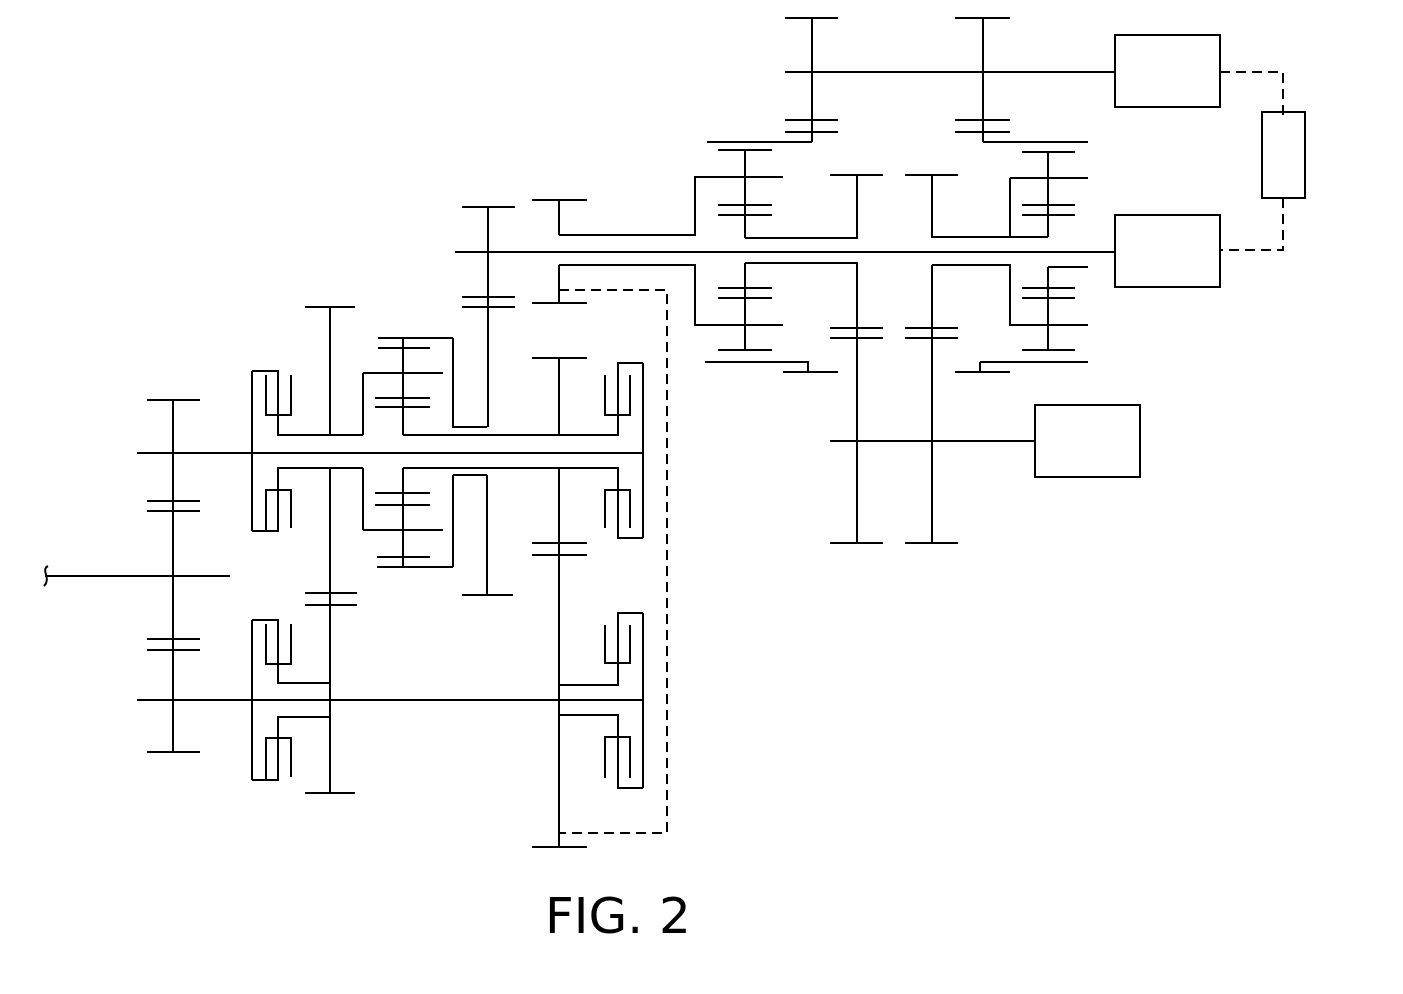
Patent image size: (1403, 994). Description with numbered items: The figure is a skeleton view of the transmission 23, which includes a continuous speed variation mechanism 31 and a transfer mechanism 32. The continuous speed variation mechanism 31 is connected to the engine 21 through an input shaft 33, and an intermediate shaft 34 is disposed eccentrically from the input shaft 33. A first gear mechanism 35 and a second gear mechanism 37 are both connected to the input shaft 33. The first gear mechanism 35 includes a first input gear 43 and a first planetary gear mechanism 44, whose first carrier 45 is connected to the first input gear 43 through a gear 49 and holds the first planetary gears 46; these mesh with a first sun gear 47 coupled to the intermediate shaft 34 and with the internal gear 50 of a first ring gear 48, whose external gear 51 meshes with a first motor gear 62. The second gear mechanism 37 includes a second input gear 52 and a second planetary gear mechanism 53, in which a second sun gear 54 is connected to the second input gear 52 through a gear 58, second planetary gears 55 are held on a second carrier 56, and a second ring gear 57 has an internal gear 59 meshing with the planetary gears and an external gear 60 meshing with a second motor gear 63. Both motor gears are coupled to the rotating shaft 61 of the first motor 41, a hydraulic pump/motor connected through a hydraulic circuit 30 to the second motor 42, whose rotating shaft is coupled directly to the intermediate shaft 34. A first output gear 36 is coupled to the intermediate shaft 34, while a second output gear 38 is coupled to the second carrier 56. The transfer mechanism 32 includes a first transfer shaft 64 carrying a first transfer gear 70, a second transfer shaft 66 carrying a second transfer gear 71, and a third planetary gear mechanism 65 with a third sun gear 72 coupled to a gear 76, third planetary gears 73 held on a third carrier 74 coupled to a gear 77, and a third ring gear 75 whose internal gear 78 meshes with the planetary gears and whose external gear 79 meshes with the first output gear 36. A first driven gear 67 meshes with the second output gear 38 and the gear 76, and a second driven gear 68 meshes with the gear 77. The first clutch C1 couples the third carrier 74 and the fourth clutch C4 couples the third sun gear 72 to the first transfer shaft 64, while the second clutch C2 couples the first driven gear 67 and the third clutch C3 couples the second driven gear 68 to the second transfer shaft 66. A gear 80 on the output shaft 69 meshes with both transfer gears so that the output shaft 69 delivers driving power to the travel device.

The engine 21 is at (1142, 441).
The transmission 23 is at (1100, 620).
The hydraulic circuit 30 is at (1306, 145).
The continuous speed variation mechanism 31 is at (1276, 364).
The transfer mechanism 32 is at (705, 700).
The input shaft 33 is at (992, 443).
The intermediate shaft 34 is at (893, 252).
The first gear mechanism 35 is at (990, 532).
The first output gear 36 is at (483, 205).
The second gear mechanism 37 is at (795, 540).
The second output gear 38 is at (545, 200).
The first motor 41 is at (1220, 50).
The second motor 42 is at (1220, 262).
The first input gear 43 is at (925, 545).
The first planetary gear mechanism 44 is at (1112, 346).
The first carrier 45 is at (953, 236).
The first planetary gears 46 is at (1050, 165).
The first sun gear 47 is at (1088, 270).
The first ring gear 48 is at (1020, 140).
The gear 49 is at (947, 326).
The internal gear 50 is at (1065, 143).
The external gear 51 is at (955, 132).
The second input gear 52 is at (848, 545).
The second planetary gear mechanism 53 is at (765, 389).
The second sun gear 54 is at (760, 283).
The second planetary gears 55 is at (737, 162).
The second carrier 56 is at (600, 235).
The second ring gear 57 is at (752, 142).
The gear 58 is at (878, 326).
The internal gear 59 is at (727, 142).
The external gear 60 is at (838, 132).
The rotating shaft 61 is at (1030, 70).
The first motor gear 62 is at (955, 120).
The second motor gear 63 is at (830, 120).
The first transfer shaft 64 is at (223, 450).
The third planetary gear mechanism 65 is at (413, 596).
The second transfer shaft 66 is at (440, 703).
The first driven gear 67 is at (543, 560).
The second driven gear 68 is at (343, 607).
The output shaft 69 is at (75, 578).
The first transfer gear 70 is at (150, 402).
The second transfer gear 71 is at (150, 650).
The third sun gear 72 is at (405, 424).
The third planetary gears 73 is at (402, 358).
The third carrier 74 is at (313, 433).
The third ring gear 75 is at (447, 338).
The gear 76 is at (545, 543).
The gear 77 is at (347, 592).
The internal gear 78 is at (392, 338).
The external gear 79 is at (505, 309).
The gear 80 is at (150, 512).
The first clutch C1 is at (260, 533).
The second clutch C2 is at (645, 745).
The third clutch C3 is at (260, 783).
The fourth clutch C4 is at (645, 505).